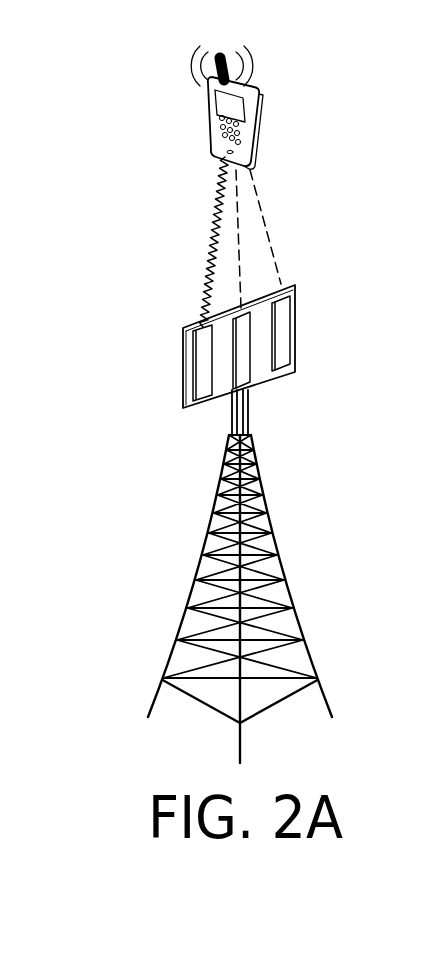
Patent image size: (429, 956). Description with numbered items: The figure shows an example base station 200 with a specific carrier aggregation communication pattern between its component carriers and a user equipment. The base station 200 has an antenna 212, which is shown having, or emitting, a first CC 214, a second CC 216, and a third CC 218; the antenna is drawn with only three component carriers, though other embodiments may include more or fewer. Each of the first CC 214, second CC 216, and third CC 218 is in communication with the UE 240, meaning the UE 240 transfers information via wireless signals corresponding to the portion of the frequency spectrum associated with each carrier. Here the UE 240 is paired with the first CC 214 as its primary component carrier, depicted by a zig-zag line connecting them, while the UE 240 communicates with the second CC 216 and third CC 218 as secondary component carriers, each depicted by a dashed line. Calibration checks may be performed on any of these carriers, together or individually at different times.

The base station 200 is at (98, 110).
The UE 240 is at (262, 113).
The antenna 212 is at (223, 378).
The first CC 214 is at (193, 351).
The second CC 216 is at (253, 373).
The third CC 218 is at (295, 322).